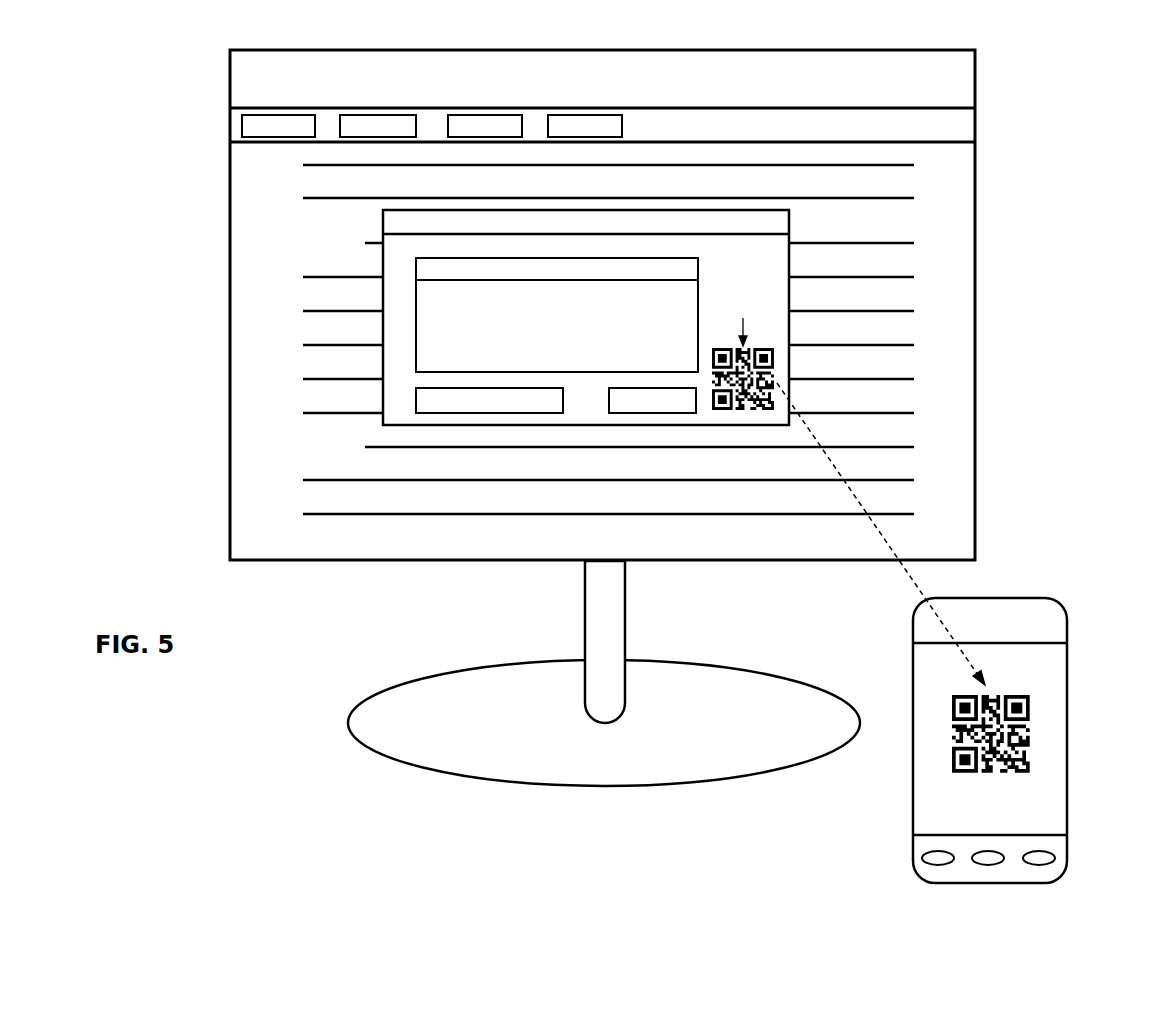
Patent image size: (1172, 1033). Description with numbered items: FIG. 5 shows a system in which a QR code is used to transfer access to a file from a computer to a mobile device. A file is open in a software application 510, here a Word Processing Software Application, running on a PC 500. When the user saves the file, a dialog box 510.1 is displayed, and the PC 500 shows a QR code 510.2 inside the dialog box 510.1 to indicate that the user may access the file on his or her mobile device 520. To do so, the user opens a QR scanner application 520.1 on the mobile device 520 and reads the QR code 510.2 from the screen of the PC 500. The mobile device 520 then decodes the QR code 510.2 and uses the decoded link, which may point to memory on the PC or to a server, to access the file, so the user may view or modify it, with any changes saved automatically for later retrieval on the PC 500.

The PC 500 is at (225, 390).
The software application 510 is at (641, 63).
The dialog box 510.1 is at (377, 267).
The QR code 510.2 is at (777, 367).
The mobile device 520 is at (1010, 593).
The QR scanner application 520.1 is at (1057, 802).